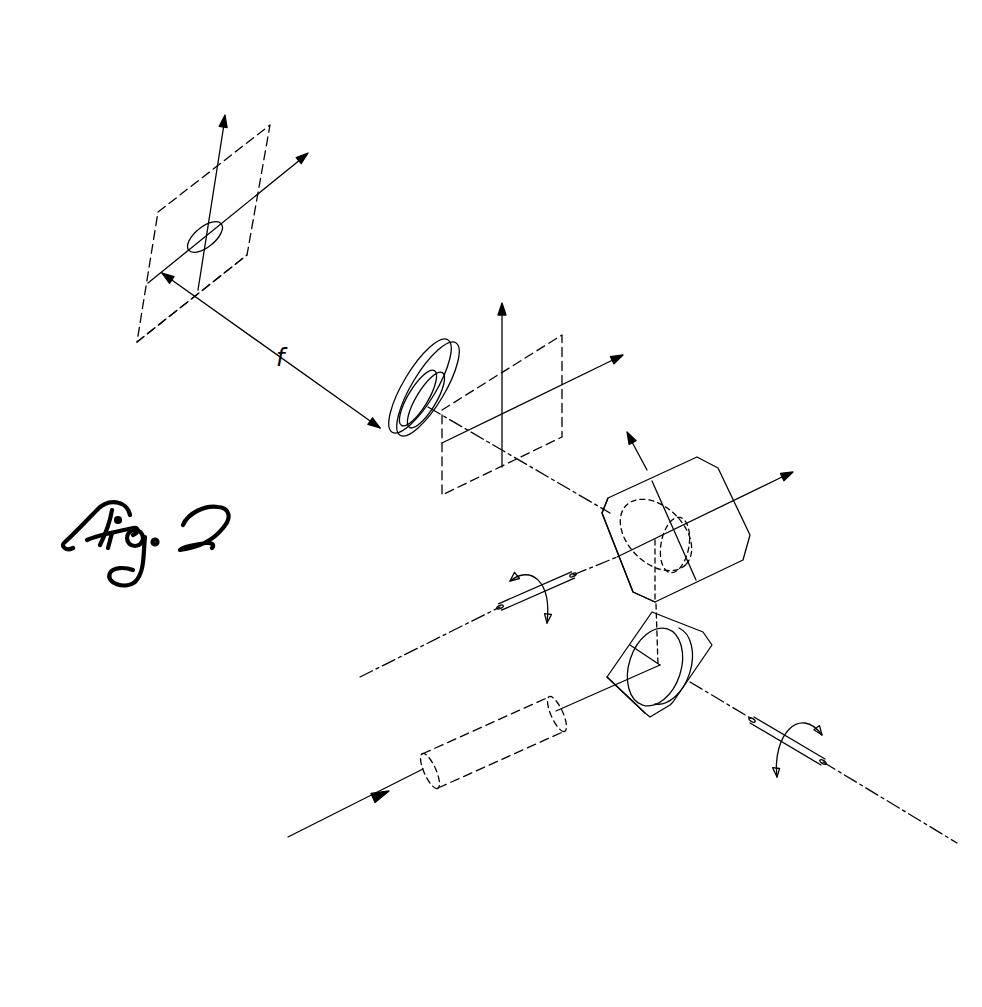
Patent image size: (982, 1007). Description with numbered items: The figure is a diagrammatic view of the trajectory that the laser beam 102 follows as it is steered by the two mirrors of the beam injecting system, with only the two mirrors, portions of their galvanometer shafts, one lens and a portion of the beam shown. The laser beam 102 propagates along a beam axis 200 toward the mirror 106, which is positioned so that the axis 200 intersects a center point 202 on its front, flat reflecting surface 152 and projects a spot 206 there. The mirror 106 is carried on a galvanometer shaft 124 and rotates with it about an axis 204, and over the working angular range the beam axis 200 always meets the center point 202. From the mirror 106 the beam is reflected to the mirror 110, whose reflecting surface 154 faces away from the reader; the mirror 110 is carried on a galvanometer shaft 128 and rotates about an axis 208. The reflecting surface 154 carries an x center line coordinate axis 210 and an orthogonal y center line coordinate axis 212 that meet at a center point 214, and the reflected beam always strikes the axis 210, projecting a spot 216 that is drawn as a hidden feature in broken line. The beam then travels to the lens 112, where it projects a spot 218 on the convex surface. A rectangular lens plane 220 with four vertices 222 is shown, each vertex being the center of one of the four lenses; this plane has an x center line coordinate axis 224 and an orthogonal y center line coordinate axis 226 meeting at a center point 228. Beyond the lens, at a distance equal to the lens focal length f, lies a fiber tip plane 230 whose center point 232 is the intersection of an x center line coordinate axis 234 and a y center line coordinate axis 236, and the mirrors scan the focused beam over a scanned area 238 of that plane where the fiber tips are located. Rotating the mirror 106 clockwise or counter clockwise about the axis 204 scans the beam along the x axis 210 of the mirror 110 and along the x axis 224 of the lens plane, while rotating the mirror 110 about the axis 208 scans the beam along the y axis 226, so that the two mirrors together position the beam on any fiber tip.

The laser beam 102 is at (477, 768).
The mirror 106 is at (701, 686).
The mirror 110 is at (677, 507).
The lens 112 is at (445, 338).
The galvanometer shaft 124 is at (772, 725).
The galvanometer shaft 128 is at (520, 610).
The reflecting surface 152 is at (670, 703).
The reflecting surface 154 is at (603, 512).
The beam axis 200 is at (580, 703).
The center point 202 is at (660, 663).
The axis 204 is at (883, 798).
The spot 206 is at (638, 713).
The axis 208 is at (413, 652).
The "x" center line coordinate axis 210 is at (697, 517).
The "y" center line coordinate axis 212 is at (657, 488).
The center point 214 is at (672, 597).
The spot 216 is at (628, 488).
The spot 218 is at (418, 437).
The lens plane 220 is at (500, 386).
The vertices 222 is at (562, 335).
The "x" center line coordinate axis 224 is at (545, 396).
The "y" center line coordinate axis 226 is at (503, 368).
The center point 228 is at (507, 416).
The fiber tip plane 230 is at (272, 140).
The center point 232 is at (223, 247).
The "x" center line coordinate axis 234 is at (245, 212).
The "y" center line coordinate axis 236 is at (208, 197).
The scanned area 238 is at (192, 227).